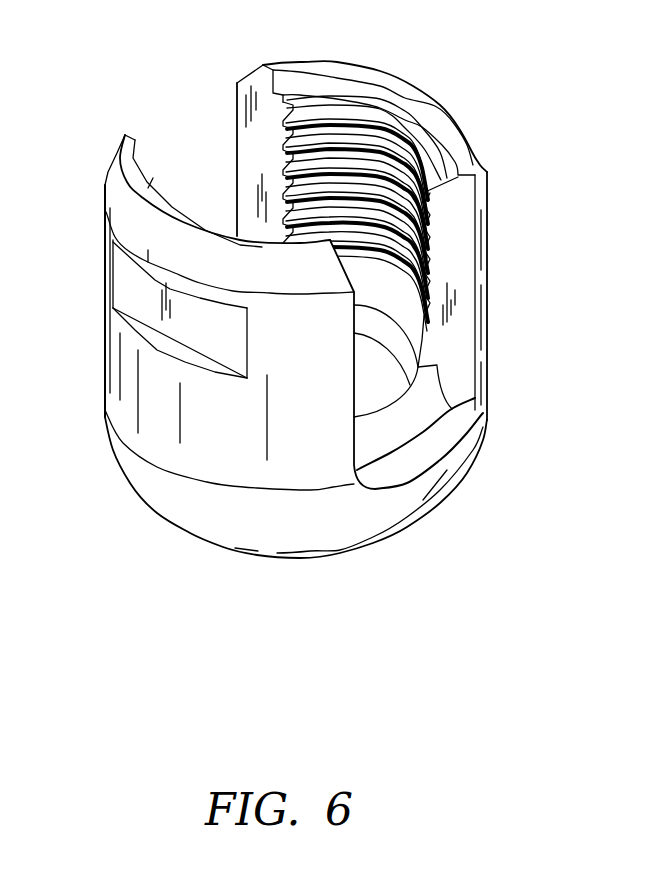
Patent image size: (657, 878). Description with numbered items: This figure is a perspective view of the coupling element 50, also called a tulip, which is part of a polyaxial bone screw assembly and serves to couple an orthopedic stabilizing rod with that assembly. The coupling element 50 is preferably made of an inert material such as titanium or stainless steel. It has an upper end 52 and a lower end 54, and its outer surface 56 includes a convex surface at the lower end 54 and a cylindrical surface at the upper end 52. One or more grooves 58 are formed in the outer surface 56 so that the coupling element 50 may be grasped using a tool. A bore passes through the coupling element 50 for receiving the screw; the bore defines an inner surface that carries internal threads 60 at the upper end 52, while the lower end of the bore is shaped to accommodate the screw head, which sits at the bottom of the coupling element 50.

The coupling element 50 is at (190, 110).
The upper end 52 is at (480, 177).
The lower end 54 is at (213, 523).
The outer surface 56 is at (397, 533).
The grooves 58 is at (133, 290).
The internal threads 60 is at (333, 163).